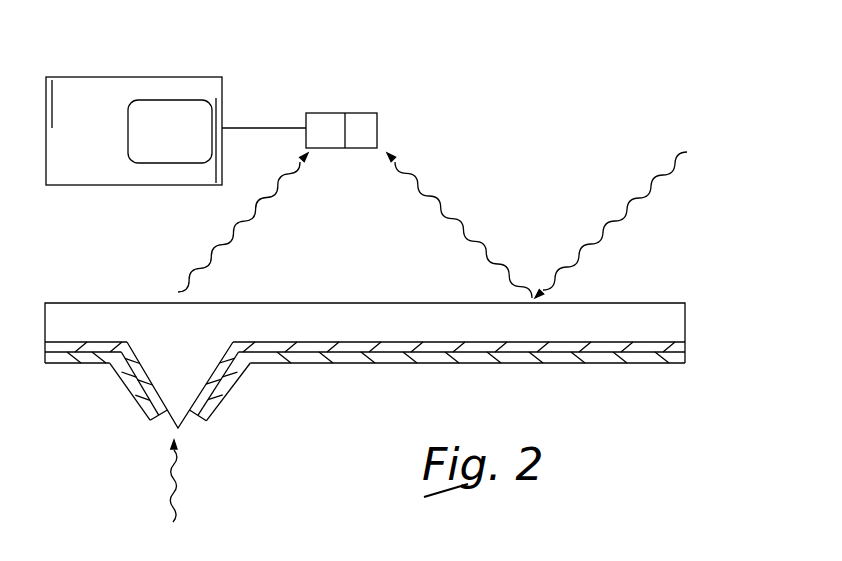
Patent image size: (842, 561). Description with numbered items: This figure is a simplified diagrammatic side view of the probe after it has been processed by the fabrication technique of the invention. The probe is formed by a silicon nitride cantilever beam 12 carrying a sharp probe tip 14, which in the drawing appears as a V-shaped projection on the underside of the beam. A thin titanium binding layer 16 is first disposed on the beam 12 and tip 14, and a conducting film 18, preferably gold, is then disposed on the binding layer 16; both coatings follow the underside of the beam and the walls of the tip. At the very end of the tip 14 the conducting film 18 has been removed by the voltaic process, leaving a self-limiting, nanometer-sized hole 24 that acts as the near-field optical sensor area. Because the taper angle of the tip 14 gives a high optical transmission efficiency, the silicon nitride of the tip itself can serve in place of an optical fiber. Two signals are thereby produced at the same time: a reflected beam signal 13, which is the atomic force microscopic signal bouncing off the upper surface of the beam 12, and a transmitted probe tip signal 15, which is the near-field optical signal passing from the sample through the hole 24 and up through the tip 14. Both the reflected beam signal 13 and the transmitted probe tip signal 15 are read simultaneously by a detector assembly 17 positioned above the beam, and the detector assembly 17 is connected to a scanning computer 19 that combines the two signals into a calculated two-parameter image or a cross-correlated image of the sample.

The cantilever beam 12 is at (658, 318).
The reflected beam signal 13 is at (413, 181).
The probe tip 14 is at (177, 397).
The transmitted probe tip signal 15 is at (248, 223).
The titanium binding layer 16 is at (677, 348).
The detector assembly 17 is at (333, 113).
The conducting film 18 is at (672, 367).
The scanning computer 19 is at (222, 77).
The self-limiting hole 24 is at (196, 420).